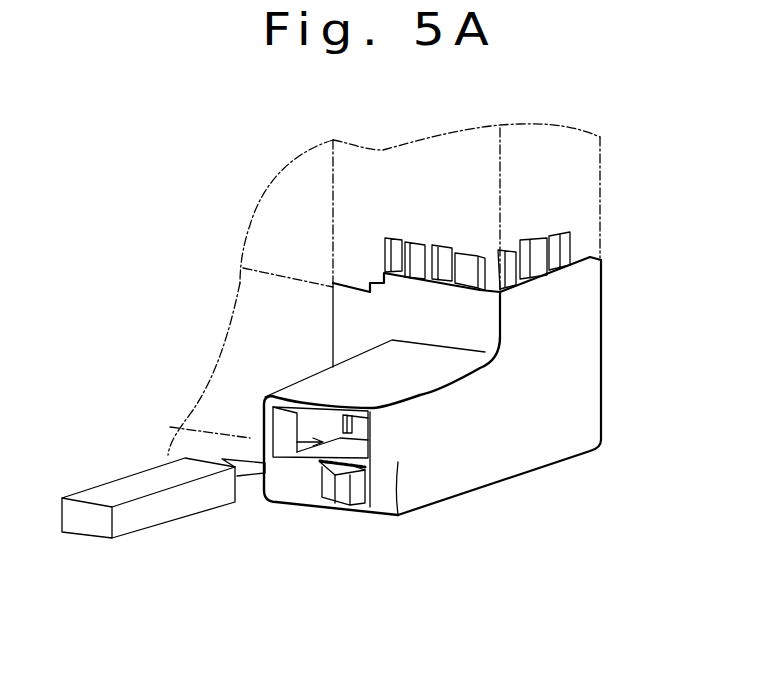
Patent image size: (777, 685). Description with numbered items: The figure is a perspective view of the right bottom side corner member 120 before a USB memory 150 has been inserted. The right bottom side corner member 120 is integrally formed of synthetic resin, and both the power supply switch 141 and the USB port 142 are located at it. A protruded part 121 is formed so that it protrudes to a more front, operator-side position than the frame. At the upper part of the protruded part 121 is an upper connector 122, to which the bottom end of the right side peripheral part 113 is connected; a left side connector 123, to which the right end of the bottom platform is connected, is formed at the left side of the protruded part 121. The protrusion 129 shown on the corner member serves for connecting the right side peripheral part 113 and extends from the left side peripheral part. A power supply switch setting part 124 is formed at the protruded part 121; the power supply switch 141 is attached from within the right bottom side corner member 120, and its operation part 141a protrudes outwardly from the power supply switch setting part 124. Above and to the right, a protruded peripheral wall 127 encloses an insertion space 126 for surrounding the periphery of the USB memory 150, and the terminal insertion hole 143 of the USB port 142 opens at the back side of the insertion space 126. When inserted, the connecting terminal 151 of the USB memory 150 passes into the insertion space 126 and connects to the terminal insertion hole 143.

The right side peripheral part 113 is at (585, 187).
The right bottom side corner member 120 is at (586, 370).
The protruded part 121 is at (468, 467).
The upper connector 122 is at (585, 288).
The left side connector 123 is at (342, 317).
The power supply switch setting part 124 is at (313, 483).
The insertion space 126 is at (293, 407).
The protruded peripheral wall 127 is at (282, 444).
The protrusion 129 is at (567, 243).
The power supply switch 141 is at (324, 517).
The operation part 141a is at (343, 493).
The USB port 142 is at (352, 420).
The terminal insertion hole 143 is at (350, 413).
The USB memory 150 is at (138, 521).
The connecting terminal 151 is at (245, 480).